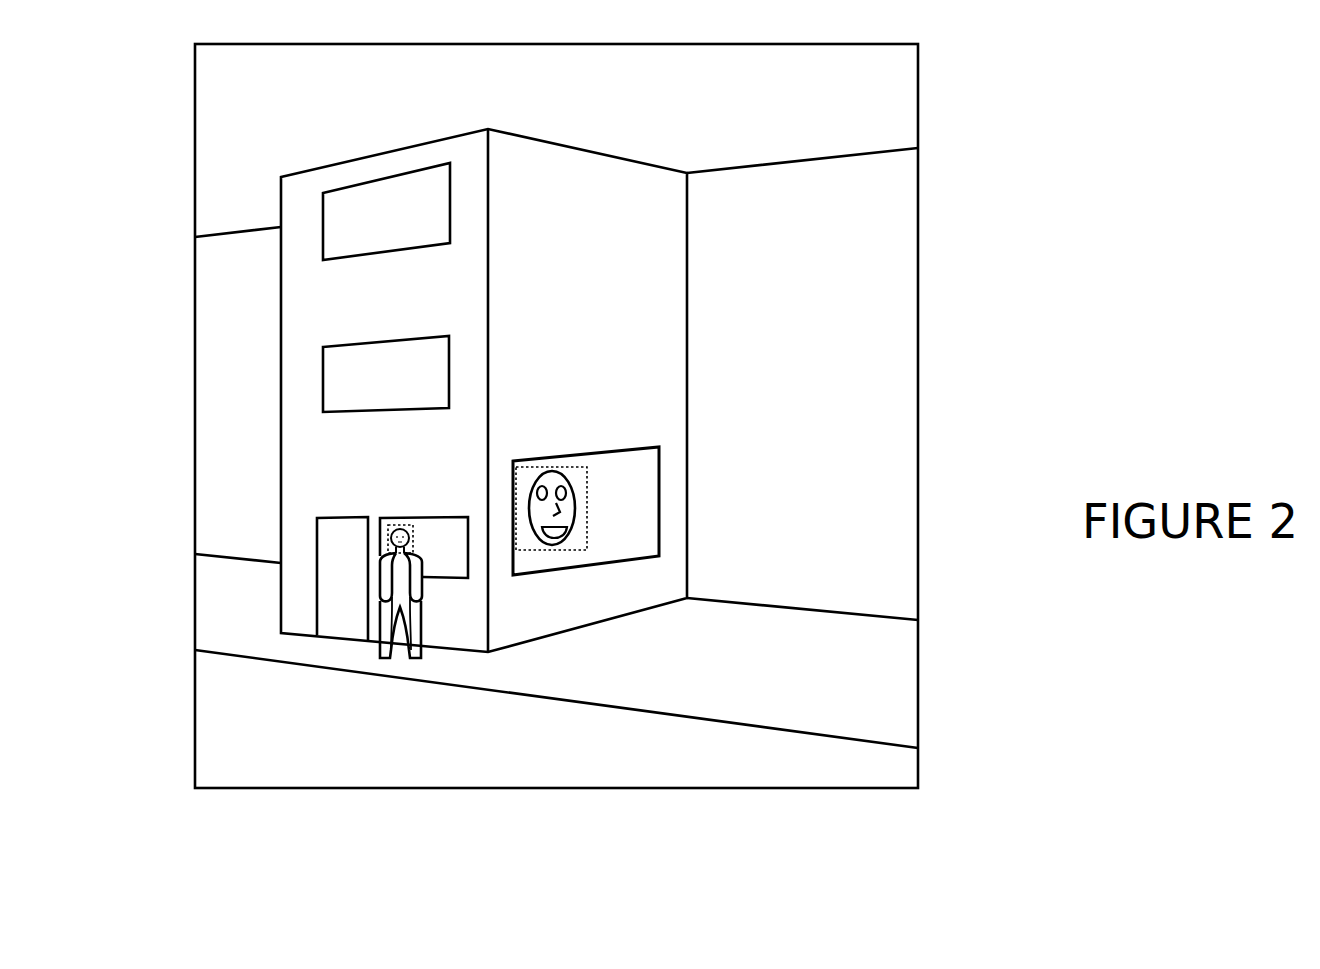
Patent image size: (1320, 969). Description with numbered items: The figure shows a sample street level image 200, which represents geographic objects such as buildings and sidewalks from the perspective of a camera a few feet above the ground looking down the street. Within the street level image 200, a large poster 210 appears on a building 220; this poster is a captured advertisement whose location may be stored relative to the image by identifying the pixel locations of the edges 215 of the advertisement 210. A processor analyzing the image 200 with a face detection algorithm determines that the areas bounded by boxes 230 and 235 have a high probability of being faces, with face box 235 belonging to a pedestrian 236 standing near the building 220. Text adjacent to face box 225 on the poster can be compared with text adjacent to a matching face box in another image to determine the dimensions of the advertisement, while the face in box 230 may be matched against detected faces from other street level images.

The street level image 200 is at (918, 75).
The large poster 210 is at (557, 636).
The edges of the advertisement 215 is at (542, 577).
The building 220 is at (638, 356).
The face box 225 is at (642, 490).
The face box 230 is at (512, 487).
The face box 235 is at (388, 539).
The pedestrian 236 is at (380, 587).